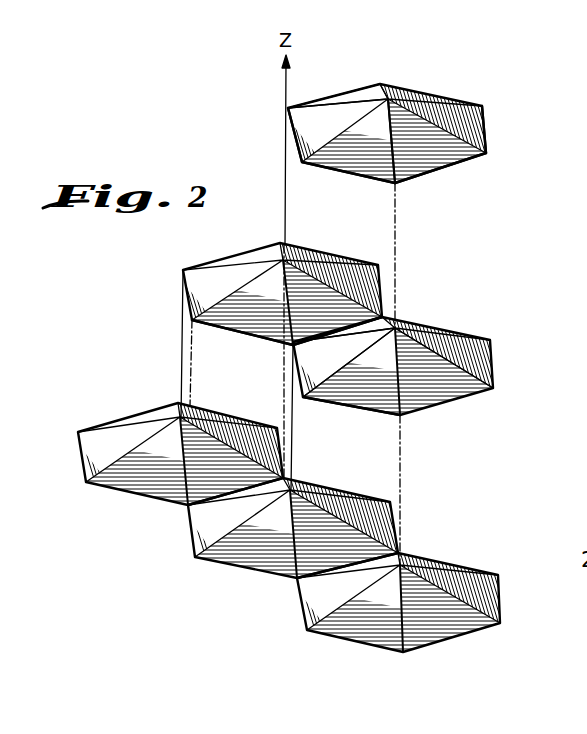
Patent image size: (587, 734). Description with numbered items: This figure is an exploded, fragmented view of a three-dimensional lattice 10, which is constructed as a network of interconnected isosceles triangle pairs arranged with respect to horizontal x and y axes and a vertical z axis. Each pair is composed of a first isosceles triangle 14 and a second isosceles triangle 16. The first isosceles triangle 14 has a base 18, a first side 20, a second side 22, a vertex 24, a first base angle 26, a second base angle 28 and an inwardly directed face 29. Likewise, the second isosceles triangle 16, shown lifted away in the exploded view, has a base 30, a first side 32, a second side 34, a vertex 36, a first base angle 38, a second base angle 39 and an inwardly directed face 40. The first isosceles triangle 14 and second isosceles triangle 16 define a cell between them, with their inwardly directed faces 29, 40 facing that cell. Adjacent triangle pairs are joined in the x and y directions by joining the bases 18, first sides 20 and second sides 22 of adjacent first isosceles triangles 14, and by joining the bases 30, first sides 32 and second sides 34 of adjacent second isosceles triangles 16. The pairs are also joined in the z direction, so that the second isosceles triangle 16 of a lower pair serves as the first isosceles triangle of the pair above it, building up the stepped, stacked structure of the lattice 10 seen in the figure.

The three-dimensional lattice 10 is at (497, 243).
The first isosceles triangle 14 is at (390, 383).
The second isosceles triangle 16 is at (450, 100).
The base 18 is at (330, 338).
The first side 20 is at (332, 343).
The second side 22 is at (396, 328).
The vertex 24 is at (396, 329).
The first base angle 26 is at (293, 346).
The second base angle 28 is at (383, 319).
The inwardly directed face 29 is at (394, 331).
The base 30 is at (353, 177).
The first side 32 is at (470, 164).
The second side 34 is at (338, 130).
The vertex 36 is at (389, 99).
The first base angle 38 is at (393, 185).
The second base angle 39 is at (300, 163).
The inwardly directed face 40 is at (390, 186).